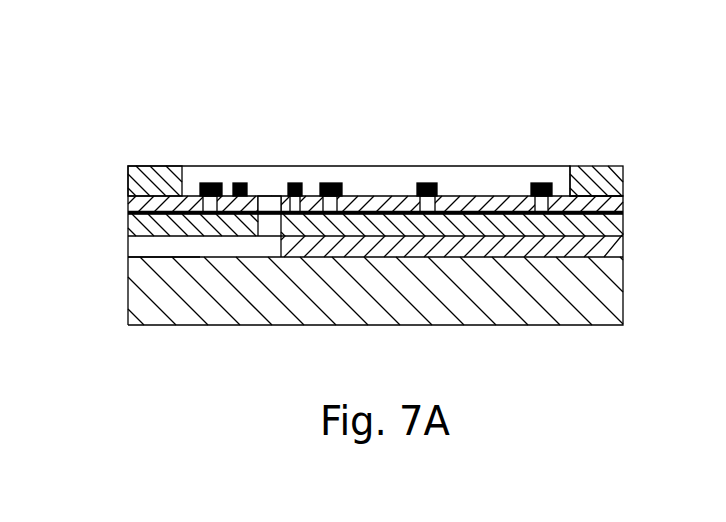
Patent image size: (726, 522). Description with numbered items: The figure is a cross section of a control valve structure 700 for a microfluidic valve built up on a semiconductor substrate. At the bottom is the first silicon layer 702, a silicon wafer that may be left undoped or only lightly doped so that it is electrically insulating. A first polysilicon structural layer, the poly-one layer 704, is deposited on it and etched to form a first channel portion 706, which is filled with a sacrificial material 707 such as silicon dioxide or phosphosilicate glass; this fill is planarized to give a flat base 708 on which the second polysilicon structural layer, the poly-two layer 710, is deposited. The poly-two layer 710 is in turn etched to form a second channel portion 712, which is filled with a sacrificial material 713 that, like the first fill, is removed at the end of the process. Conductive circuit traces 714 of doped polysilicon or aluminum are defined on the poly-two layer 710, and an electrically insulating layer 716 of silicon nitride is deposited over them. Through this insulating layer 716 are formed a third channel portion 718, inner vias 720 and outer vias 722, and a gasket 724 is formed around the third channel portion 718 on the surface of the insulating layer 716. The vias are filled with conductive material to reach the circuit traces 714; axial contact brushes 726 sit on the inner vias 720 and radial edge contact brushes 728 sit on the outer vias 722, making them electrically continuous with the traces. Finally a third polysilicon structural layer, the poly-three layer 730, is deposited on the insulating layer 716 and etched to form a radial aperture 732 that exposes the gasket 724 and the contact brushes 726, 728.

The control valve structure 700 is at (556, 80).
The first silicon layer 702 is at (618, 285).
The poly 1 layer 704 is at (618, 245).
The first channel portion 706 is at (147, 247).
The sacrificial material 707 is at (130, 258).
The flat base 708 is at (157, 231).
The poly 2 layer 710 is at (626, 223).
The second channel portion 712 is at (267, 225).
The sacrificial material 713 is at (272, 227).
The conductive circuit traces 714 is at (624, 213).
The electrically insulating layer 716 is at (624, 194).
The third channel portion 718 is at (268, 205).
The inner vias 720 is at (338, 206).
The outer vias 722 is at (202, 196).
The gasket 724 is at (241, 183).
The axial contact brushes 726 is at (330, 183).
The radial edge contact brushes 728 is at (205, 205).
The poly 3 layer 730 is at (160, 170).
The radial aperture 732 is at (491, 174).